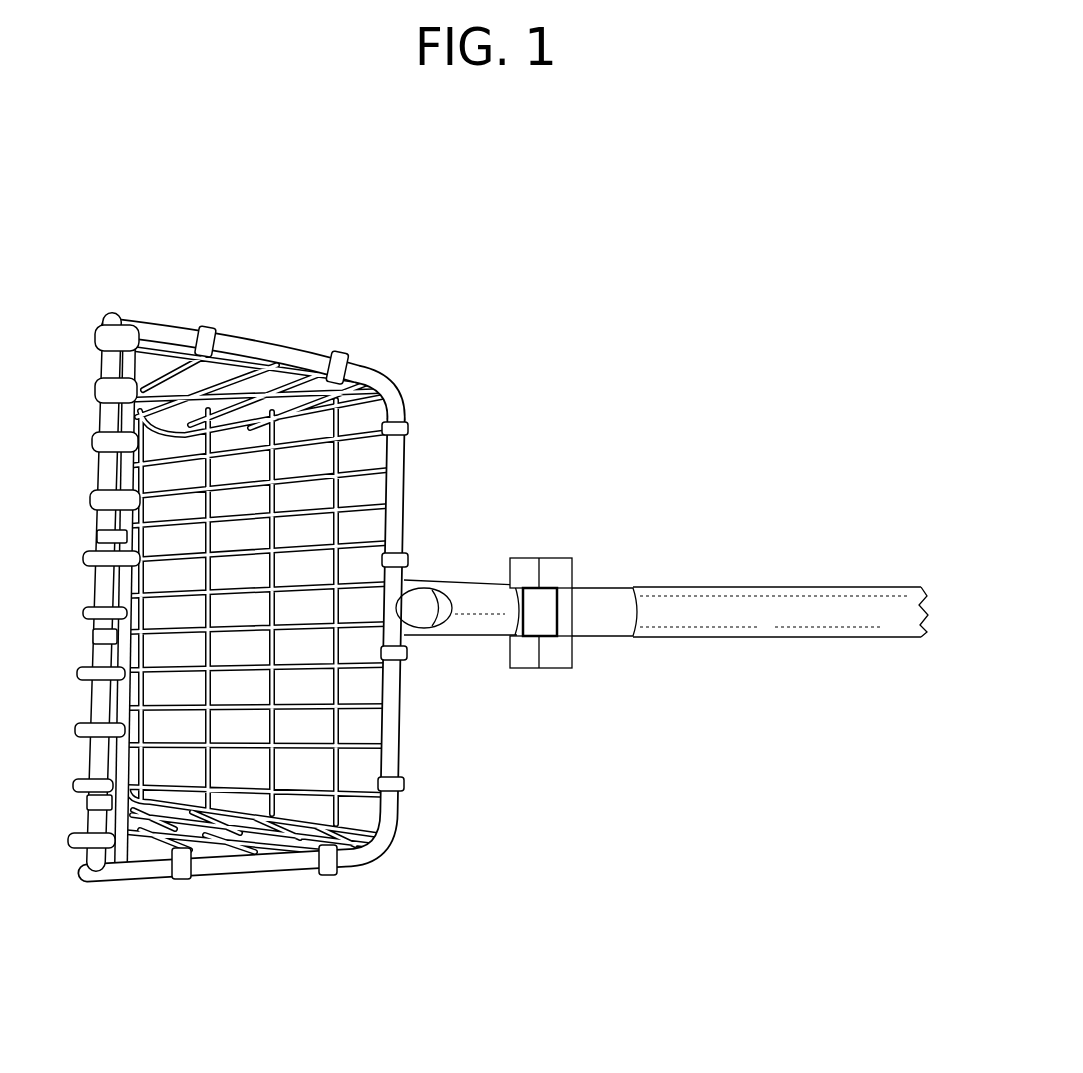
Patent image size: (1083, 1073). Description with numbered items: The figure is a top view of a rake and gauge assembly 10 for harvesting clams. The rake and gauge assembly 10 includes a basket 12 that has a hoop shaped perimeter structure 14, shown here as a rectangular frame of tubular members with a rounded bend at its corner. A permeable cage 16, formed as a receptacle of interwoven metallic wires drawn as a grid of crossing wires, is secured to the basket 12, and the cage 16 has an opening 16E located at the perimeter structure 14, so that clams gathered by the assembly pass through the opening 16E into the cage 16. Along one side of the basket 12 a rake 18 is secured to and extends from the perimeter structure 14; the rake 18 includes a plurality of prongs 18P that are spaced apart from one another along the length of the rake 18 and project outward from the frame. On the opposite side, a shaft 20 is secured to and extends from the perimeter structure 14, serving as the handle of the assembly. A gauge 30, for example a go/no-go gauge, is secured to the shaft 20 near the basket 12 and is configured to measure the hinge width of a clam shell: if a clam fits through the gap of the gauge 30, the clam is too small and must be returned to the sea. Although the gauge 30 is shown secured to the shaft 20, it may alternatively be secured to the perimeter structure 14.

The rake and gauge assembly 10 is at (474, 581).
The basket 12 is at (450, 784).
The hoop shaped perimeter structure 14 is at (277, 346).
The permeable cage 16 is at (343, 494).
The opening 16E is at (367, 411).
The rake 18 is at (78, 620).
The prongs 18P is at (108, 381).
The shaft 20 is at (488, 581).
The gauge 30 is at (563, 562).